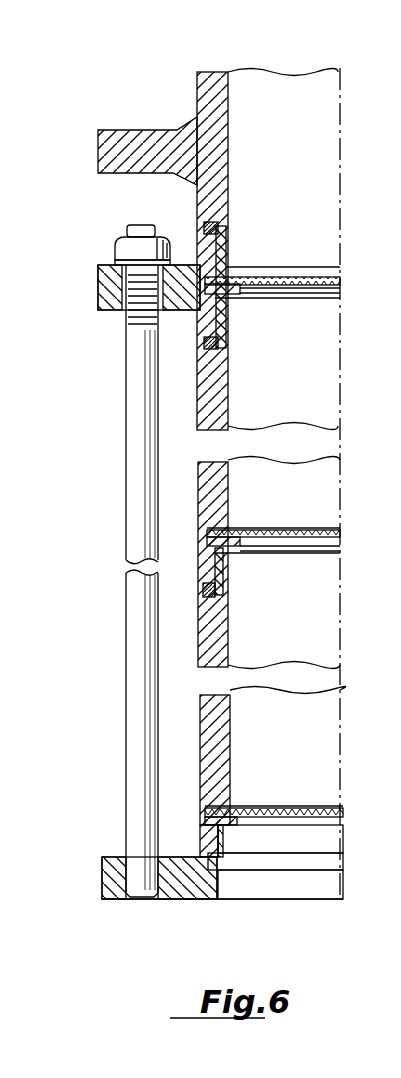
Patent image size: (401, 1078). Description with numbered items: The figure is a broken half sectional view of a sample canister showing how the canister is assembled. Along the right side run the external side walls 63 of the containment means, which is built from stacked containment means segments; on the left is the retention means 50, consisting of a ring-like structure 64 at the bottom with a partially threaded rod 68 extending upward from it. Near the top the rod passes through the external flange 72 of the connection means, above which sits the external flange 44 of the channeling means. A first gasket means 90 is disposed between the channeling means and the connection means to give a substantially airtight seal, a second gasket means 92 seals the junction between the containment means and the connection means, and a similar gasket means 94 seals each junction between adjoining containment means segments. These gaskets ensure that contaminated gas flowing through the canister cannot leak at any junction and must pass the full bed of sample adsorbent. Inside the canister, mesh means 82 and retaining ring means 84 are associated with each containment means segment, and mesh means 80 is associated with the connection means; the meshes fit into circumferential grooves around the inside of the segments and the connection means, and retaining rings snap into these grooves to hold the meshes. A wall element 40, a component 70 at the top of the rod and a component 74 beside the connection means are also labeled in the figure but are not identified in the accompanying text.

The wall 40 is at (215, 80).
The external flange of the channeling means 44 is at (135, 143).
The retention means 50 is at (100, 873).
The external side walls of the containment means 63 is at (217, 745).
The ring-like structure 64 is at (115, 893).
The partially threaded rod 68 is at (136, 398).
The nut 70 is at (121, 248).
The external flange of the connection means 72 is at (97, 292).
The bracket 74 is at (214, 250).
The mesh means 80 is at (305, 277).
The mesh means 82 is at (310, 528).
The retaining ring means 84 is at (240, 547).
The first gasket means 90 is at (214, 229).
The second gasket means 92 is at (216, 345).
The gasket means 94 is at (218, 595).